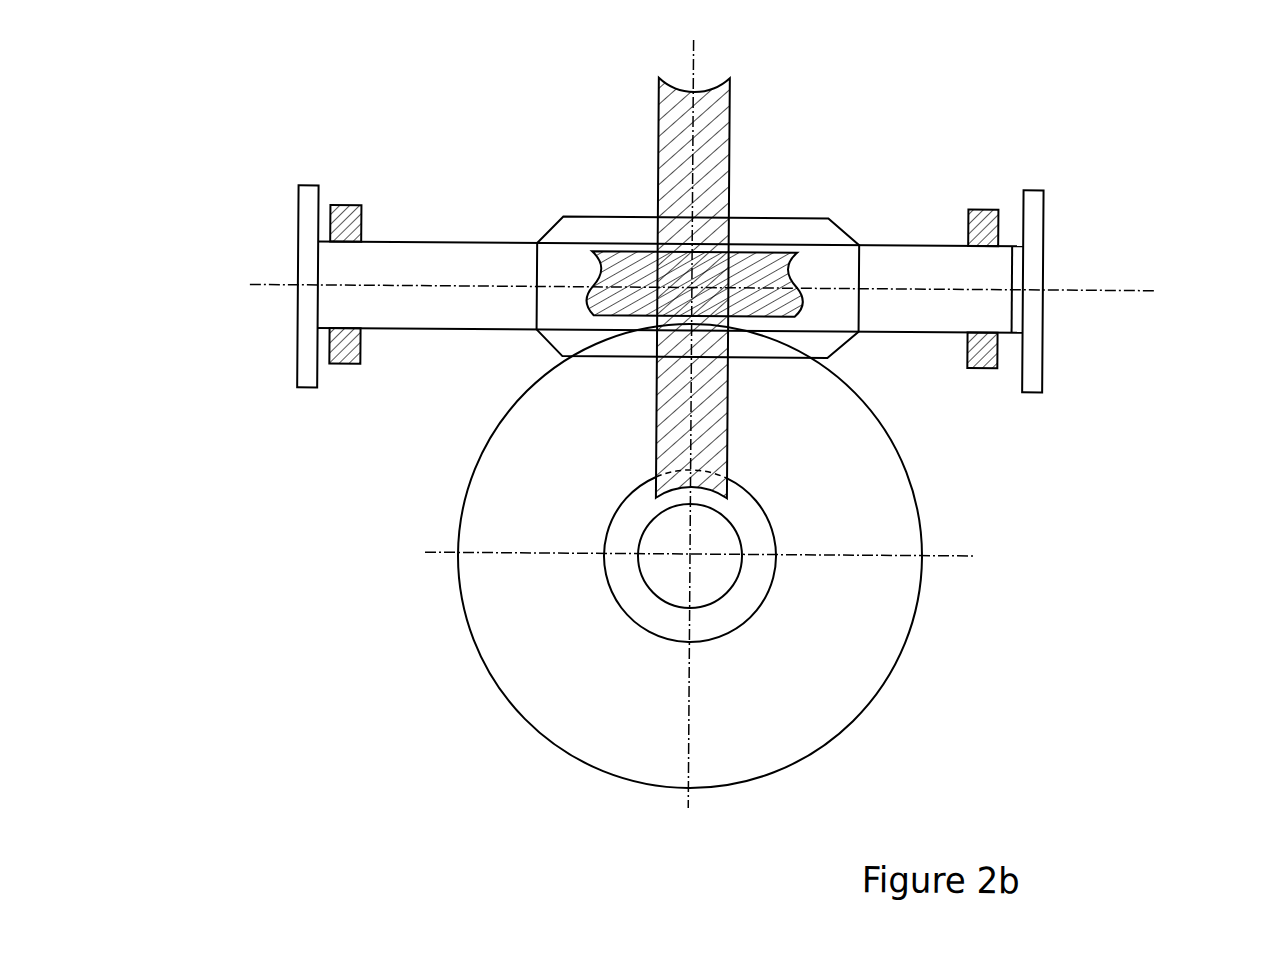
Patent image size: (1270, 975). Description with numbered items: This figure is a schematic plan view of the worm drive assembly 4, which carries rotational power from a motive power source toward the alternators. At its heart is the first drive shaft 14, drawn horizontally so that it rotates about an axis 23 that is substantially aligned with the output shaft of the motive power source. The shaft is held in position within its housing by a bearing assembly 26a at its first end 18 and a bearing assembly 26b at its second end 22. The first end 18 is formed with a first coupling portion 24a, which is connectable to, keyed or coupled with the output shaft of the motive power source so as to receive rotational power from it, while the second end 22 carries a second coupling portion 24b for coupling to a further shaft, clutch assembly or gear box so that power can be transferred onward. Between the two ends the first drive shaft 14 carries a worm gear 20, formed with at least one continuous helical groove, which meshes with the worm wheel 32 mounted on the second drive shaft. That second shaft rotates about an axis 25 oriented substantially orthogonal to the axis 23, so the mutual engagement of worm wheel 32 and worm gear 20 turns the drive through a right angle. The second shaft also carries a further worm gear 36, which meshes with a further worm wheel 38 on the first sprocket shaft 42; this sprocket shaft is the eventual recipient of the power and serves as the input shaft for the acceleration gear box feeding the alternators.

The worm drive assembly 4 is at (716, 458).
The first drive shaft 14 is at (916, 258).
The first end 18 is at (274, 293).
The worm gear 20 is at (720, 234).
The second end 22 is at (1109, 307).
The axis 23 is at (1130, 285).
The first coupling portion 24a is at (305, 200).
The second coupling portion 24b is at (1031, 212).
The axis 25 is at (690, 556).
The bearing assembly 26a is at (341, 374).
The bearing assembly 26b is at (984, 376).
The worm wheel 32 is at (741, 459).
The further worm gear 36 is at (663, 620).
The further worm wheel 38 is at (716, 114).
The first sprocket shaft 42 is at (765, 266).